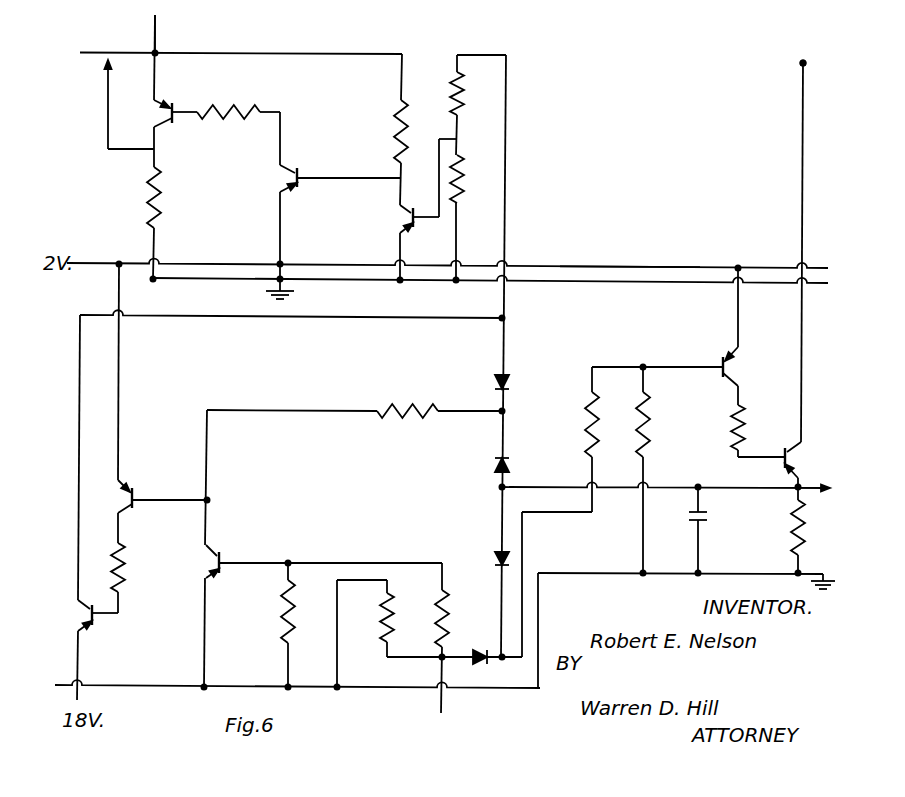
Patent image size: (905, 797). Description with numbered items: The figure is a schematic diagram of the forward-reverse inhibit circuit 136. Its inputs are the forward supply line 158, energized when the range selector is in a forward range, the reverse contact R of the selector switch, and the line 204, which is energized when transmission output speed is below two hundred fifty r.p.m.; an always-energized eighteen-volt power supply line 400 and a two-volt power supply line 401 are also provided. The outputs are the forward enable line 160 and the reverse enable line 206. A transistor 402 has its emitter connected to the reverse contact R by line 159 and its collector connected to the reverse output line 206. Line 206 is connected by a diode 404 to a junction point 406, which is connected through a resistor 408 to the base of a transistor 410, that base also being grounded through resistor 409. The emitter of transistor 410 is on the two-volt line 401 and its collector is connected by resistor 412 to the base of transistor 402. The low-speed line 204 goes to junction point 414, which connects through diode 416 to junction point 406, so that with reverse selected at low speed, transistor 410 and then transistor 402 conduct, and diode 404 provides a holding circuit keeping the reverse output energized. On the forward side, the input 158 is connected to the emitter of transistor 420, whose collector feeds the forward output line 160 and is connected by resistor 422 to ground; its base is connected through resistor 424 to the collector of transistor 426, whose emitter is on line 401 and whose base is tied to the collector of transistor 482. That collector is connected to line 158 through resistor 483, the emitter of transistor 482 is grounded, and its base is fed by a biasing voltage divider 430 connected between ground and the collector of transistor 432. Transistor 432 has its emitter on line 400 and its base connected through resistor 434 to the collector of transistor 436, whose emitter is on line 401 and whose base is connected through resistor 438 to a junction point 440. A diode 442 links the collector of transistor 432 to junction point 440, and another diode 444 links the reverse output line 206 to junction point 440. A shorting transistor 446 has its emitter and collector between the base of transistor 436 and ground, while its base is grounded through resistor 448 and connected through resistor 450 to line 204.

The forward supply line 158 is at (155, 35).
The forward enable line 160 is at (102, 118).
The transistor 420 is at (172, 101).
The resistor 424 is at (258, 113).
The resistor 422 is at (162, 202).
The transistor 426 is at (300, 170).
The resistor 483 is at (403, 122).
The biasing voltage divider 430 is at (458, 137).
The transistor 482 is at (426, 232).
The 2 volt power supply line 401 is at (650, 268).
The reverse input line 159 is at (802, 156).
The reverse contact R is at (803, 63).
The forward-reverse inhibit circuit 136 is at (112, 208).
The resistor 438 is at (422, 405).
The diode 442 is at (504, 378).
The junction point 440 is at (505, 411).
The diode 444 is at (509, 462).
The resistor 408 is at (587, 432).
The resistor 409 is at (648, 437).
The diode 404 is at (493, 553).
The resistor 450 is at (443, 598).
The diode 416 is at (476, 657).
The junction point 406 is at (490, 664).
The junction point 414 is at (438, 658).
The resistor 448 is at (285, 617).
The 250 r.p.m. line 204 is at (443, 703).
The 18 volt power supply line 400 is at (75, 698).
The transistor 432 is at (90, 625).
The transistor 436 is at (135, 492).
The resistor 434 is at (122, 578).
The shorting transistor 446 is at (222, 557).
The transistor 410 is at (723, 363).
The resistor 412 is at (742, 408).
The transistor 402 is at (783, 452).
The reverse enable line 206 is at (810, 486).